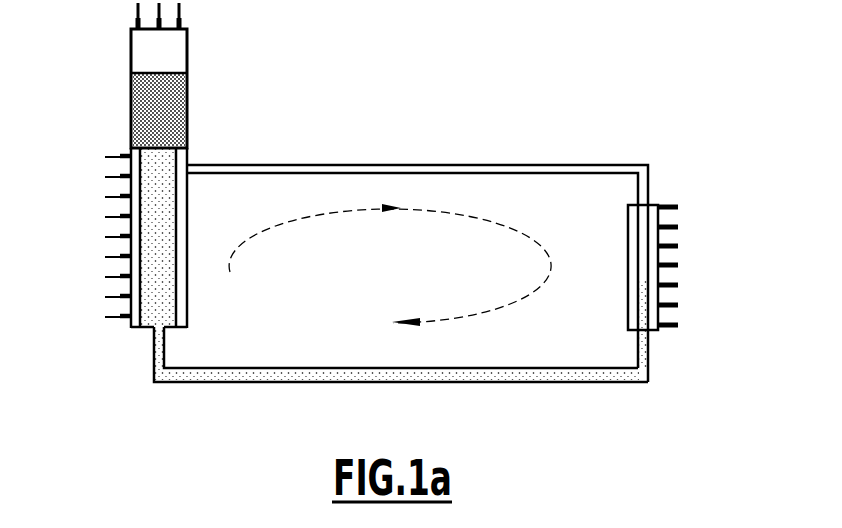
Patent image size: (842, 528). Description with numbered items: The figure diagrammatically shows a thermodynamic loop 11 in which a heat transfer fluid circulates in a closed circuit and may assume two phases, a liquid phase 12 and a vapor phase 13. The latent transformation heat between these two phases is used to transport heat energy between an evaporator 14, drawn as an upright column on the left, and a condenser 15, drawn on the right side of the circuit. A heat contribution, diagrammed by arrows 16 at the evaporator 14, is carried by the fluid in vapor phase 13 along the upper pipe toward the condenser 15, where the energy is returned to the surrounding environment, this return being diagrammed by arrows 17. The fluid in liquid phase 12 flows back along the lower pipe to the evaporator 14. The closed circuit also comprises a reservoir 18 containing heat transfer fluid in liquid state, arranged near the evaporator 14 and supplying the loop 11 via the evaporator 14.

The thermodynamic loop 11 is at (508, 80).
The liquid phase 12 is at (314, 373).
The vapor phase 13 is at (378, 165).
The evaporator 14 is at (187, 280).
The condenser 15 is at (628, 258).
The heat contribution arrows 16 is at (115, 338).
The heat return arrows 17 is at (670, 192).
The reservoir 18 is at (131, 97).